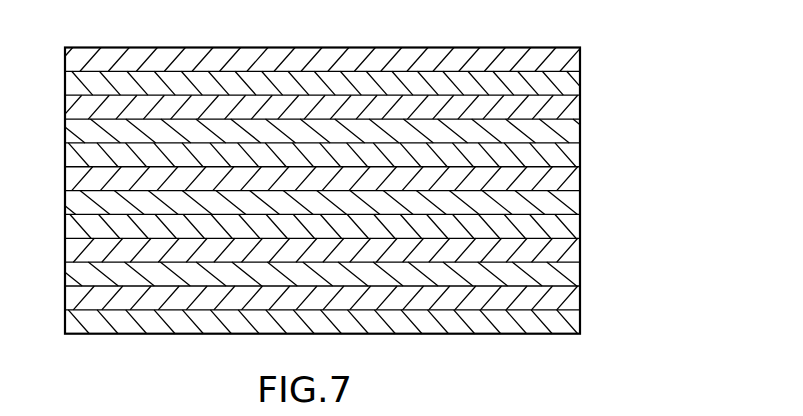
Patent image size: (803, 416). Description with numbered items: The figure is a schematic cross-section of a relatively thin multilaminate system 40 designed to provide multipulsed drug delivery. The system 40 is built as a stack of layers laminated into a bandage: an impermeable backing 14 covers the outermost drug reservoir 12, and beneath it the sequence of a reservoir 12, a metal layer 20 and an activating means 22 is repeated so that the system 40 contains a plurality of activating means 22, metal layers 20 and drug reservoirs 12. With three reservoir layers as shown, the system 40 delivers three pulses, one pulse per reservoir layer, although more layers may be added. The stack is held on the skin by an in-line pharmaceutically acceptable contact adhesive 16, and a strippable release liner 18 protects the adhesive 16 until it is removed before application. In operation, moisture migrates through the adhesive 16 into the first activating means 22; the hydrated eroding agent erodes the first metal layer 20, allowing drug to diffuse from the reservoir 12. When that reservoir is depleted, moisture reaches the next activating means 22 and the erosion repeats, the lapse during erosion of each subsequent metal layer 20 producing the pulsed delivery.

The multilaminate system 40 is at (595, 25).
The impermeable backing 14 is at (580, 56).
The reservoir 12 is at (580, 79).
The metal layer 20 is at (580, 101).
The activating means 22 is at (580, 126).
The contact adhesive 16 is at (573, 297).
The strippable release liner 18 is at (553, 325).